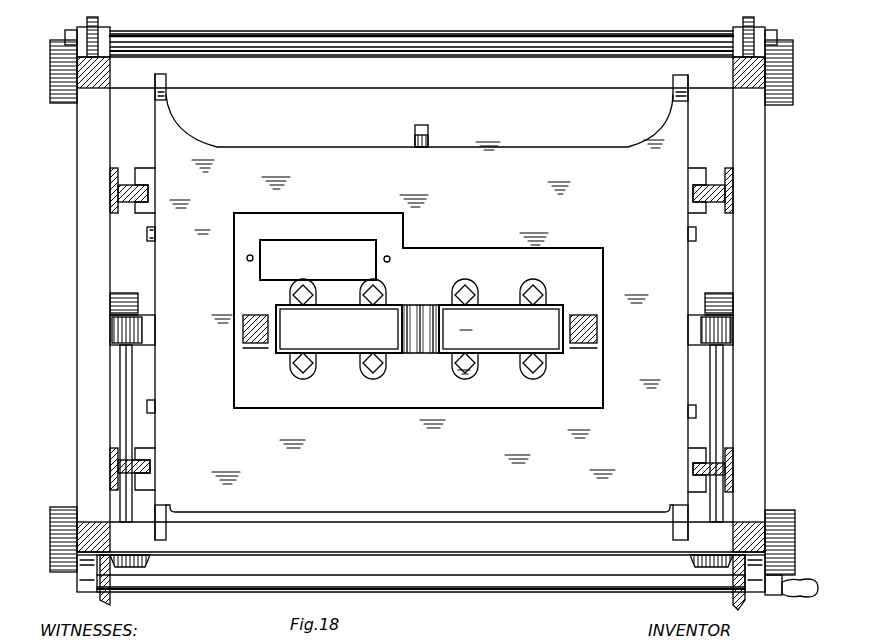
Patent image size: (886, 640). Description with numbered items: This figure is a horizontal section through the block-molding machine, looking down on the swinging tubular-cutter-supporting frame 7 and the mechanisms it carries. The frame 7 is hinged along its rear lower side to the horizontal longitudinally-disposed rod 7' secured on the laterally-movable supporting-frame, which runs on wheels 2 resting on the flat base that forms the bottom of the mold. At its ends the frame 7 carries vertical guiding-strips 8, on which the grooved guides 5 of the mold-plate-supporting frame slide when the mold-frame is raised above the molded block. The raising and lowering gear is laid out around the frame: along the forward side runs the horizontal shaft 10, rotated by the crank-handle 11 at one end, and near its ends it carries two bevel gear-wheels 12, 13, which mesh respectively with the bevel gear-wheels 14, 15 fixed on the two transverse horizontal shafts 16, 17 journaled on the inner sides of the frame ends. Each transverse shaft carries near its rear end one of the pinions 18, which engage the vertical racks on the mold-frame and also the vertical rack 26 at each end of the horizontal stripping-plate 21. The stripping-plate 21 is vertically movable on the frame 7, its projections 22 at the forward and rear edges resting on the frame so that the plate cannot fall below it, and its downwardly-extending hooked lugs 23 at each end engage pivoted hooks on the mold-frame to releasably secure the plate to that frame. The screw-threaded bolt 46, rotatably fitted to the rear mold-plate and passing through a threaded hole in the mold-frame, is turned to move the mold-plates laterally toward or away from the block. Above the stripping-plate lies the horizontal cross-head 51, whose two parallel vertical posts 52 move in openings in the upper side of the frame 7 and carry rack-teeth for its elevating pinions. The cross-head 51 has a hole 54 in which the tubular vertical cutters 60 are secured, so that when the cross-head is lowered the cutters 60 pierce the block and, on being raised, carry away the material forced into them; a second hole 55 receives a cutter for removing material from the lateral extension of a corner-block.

The wheels 2 is at (58, 104).
The grooved guides 5 is at (147, 172).
The tubular-cutter-supporting frame 7 is at (421, 304).
The horizontal longitudinally-disposed rod 7' is at (421, 32).
The vertical guiding-strips 8 is at (112, 193).
The horizontal shaft 10 is at (464, 586).
The crank-handle 11 is at (804, 600).
The bevel gear-wheel 12 is at (733, 597).
The bevel gear-wheel 13 is at (112, 598).
The bevel gear-wheel 14 is at (692, 562).
The bevel gear-wheel 15 is at (150, 562).
The transverse horizontal shaft 16 is at (723, 400).
The transverse horizontal shaft 17 is at (120, 402).
The pinions 18 is at (112, 335).
The stripping-plate 21 is at (419, 303).
The projections 22 is at (166, 78).
The hooked lugs 23 is at (155, 242).
The vertical rack 26 is at (150, 336).
The screw-threaded bolt 46 is at (430, 132).
The cross-head 51 is at (446, 252).
The vertical posts 52 is at (582, 315).
The hole 54 is at (278, 306).
The hole 55 is at (318, 260).
The tubular vertical cutters 60 is at (338, 305).